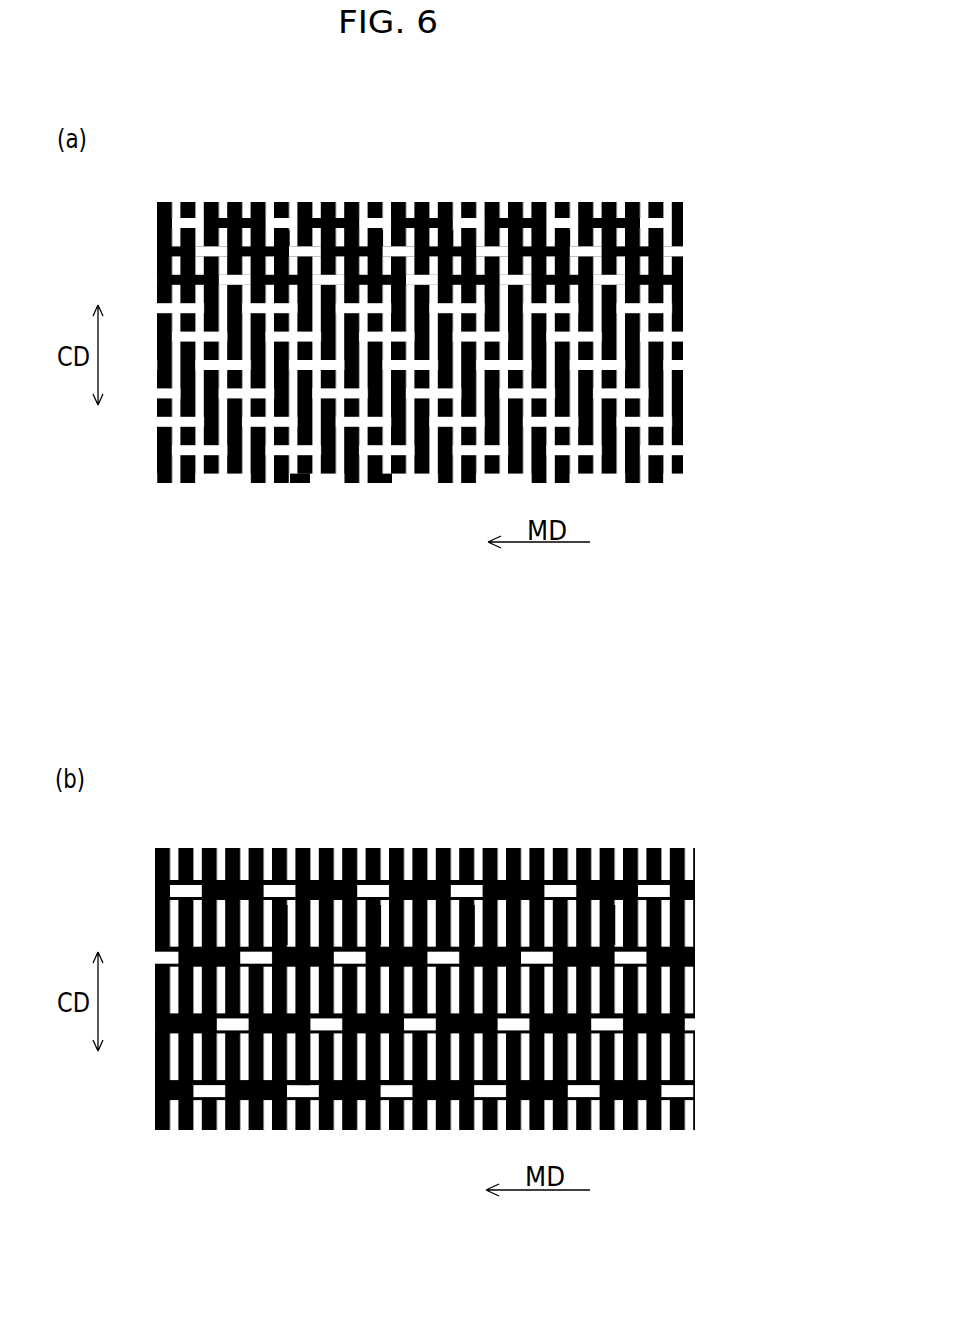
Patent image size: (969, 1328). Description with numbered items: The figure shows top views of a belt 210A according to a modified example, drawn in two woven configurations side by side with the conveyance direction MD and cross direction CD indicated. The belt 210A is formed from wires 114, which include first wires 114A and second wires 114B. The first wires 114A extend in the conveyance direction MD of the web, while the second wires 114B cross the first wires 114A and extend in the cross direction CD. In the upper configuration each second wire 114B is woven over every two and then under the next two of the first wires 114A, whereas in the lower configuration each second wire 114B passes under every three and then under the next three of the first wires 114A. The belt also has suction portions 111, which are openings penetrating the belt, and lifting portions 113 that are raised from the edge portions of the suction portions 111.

The suction portions 111 is at (268, 240).
The lifting portions 113 is at (455, 218).
The wires 114 is at (415, 549).
The first wires 114A is at (305, 478).
The second wires 114B is at (383, 477).
The belt 210A is at (566, 121).